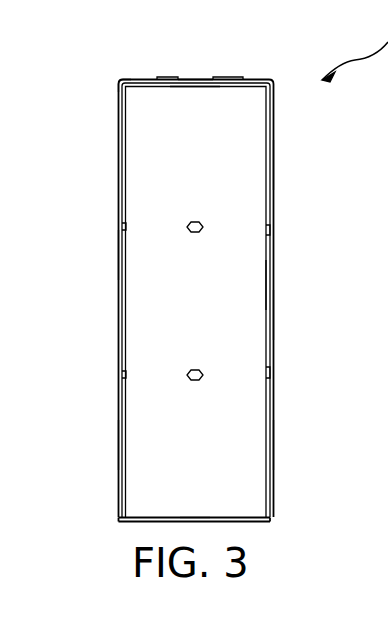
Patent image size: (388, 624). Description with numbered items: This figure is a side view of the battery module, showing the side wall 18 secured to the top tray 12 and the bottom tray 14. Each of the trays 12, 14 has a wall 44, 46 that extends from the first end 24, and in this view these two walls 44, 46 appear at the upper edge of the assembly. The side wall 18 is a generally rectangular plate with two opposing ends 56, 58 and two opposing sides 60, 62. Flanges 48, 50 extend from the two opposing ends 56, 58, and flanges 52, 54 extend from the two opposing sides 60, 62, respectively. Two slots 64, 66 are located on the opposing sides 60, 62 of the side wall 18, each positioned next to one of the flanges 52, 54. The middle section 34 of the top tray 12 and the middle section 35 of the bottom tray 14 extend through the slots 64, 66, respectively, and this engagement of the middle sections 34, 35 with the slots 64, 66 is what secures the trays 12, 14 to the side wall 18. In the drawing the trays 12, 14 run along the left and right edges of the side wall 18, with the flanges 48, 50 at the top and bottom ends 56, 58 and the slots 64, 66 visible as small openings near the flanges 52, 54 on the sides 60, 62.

The top tray 12 is at (118, 143).
The bottom tray 14 is at (272, 440).
The side wall 18 is at (245, 165).
The first end 24 is at (118, 82).
The middle section 34 is at (118, 256).
The middle section 35 is at (270, 313).
The wall 44 is at (160, 78).
The wall 46 is at (238, 78).
The flange 48 is at (194, 88).
The flange 50 is at (193, 517).
The flange 52 is at (124, 214).
The flange 54 is at (265, 203).
The end 56 is at (197, 80).
The end 58 is at (212, 522).
The side 60 is at (118, 444).
The side 62 is at (272, 397).
The slot 64 is at (126, 350).
The slot 66 is at (265, 283).